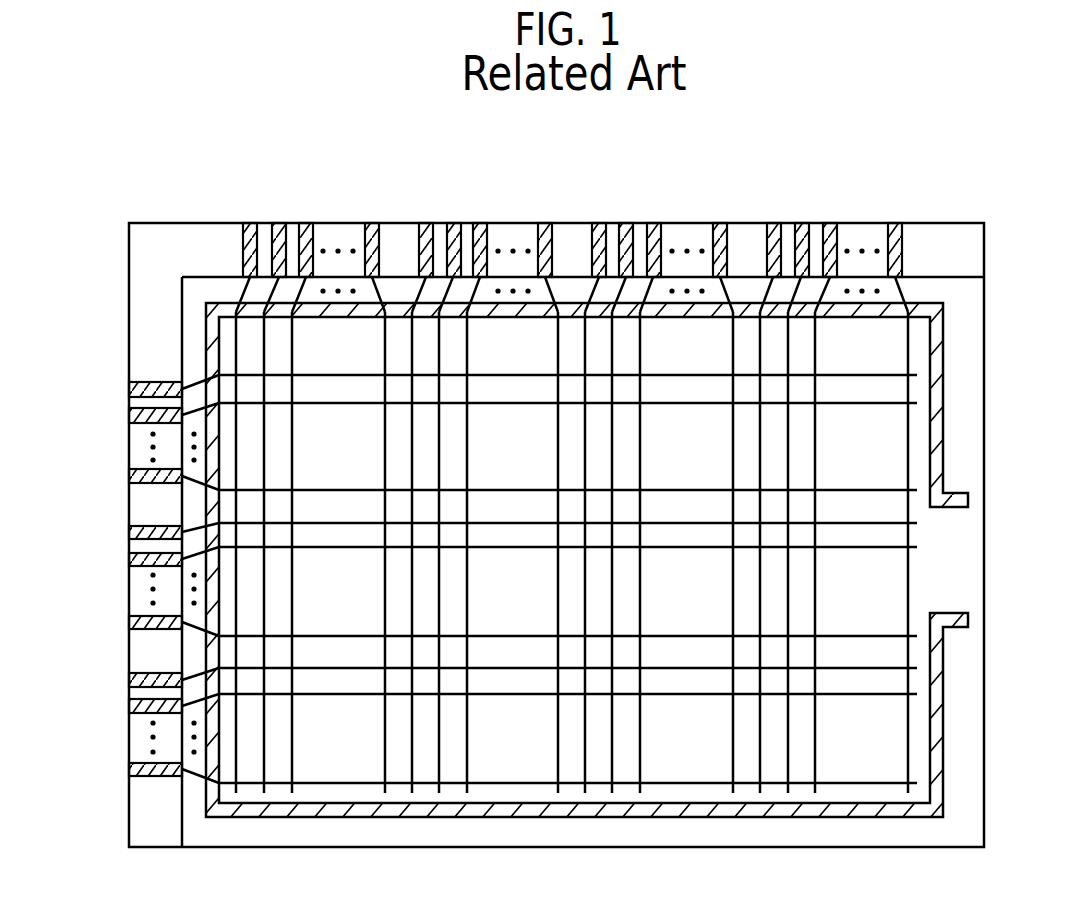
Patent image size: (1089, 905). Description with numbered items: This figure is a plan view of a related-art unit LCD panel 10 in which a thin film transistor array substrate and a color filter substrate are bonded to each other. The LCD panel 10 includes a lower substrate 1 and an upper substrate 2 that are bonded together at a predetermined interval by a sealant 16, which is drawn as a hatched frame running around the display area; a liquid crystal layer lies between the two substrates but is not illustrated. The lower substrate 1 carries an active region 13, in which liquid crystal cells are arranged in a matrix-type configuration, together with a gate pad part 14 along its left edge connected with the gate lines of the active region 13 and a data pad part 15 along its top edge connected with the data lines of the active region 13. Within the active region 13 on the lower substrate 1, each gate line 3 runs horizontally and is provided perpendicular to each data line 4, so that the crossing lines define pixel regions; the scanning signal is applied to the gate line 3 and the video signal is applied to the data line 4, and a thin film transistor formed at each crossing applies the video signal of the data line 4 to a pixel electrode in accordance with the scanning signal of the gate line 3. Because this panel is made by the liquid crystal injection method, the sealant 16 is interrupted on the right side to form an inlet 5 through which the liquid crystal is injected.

The LCD panel 10 is at (163, 197).
The lower substrate 1 is at (968, 253).
The upper substrate 2 is at (968, 348).
The gate line 3 is at (512, 695).
The data line 4 is at (640, 757).
The liquid crystal injection hole 5 is at (960, 578).
The active region 13 is at (496, 463).
The gate pad part 14 is at (110, 378).
The data pad part 15 is at (906, 212).
The sealant 16 is at (937, 458).